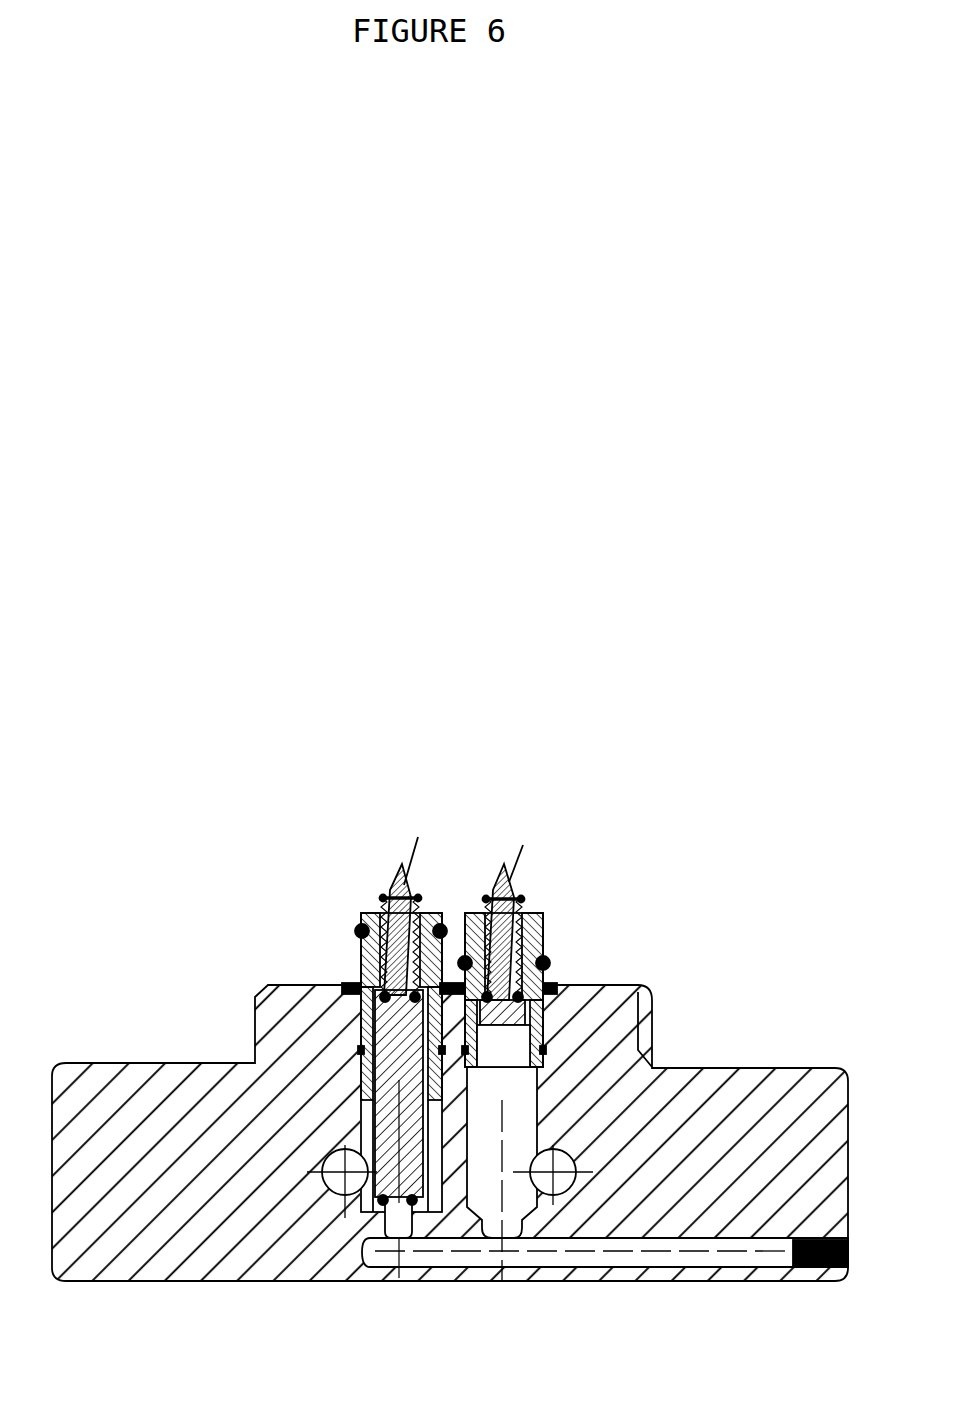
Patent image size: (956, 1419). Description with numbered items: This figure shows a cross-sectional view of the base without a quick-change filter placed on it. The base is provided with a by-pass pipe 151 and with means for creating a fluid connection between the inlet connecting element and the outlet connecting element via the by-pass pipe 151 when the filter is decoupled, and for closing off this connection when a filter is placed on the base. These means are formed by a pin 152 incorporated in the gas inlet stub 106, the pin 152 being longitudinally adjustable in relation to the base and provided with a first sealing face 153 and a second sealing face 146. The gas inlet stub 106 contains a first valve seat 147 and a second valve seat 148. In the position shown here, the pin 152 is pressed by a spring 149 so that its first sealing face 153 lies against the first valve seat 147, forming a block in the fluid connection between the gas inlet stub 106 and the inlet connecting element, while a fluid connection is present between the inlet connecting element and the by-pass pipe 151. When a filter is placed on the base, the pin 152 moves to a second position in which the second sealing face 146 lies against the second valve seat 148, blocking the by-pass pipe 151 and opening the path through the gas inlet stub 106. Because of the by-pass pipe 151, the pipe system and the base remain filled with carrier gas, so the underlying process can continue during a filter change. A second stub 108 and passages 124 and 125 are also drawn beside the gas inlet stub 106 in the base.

The gas inlet stub 106 is at (427, 910).
The second valve cartridge 108 is at (557, 897).
The inlet passage 124 is at (320, 1156).
The outlet passage 125 is at (578, 1152).
The second sealing face 146 is at (380, 1213).
The first valve seat 147 is at (385, 990).
The second valve seat 148 is at (382, 1210).
The spring 149 is at (385, 897).
The by-pass pipe 151 is at (457, 1258).
The pin 152 is at (393, 1096).
The first sealing face 153 is at (352, 990).